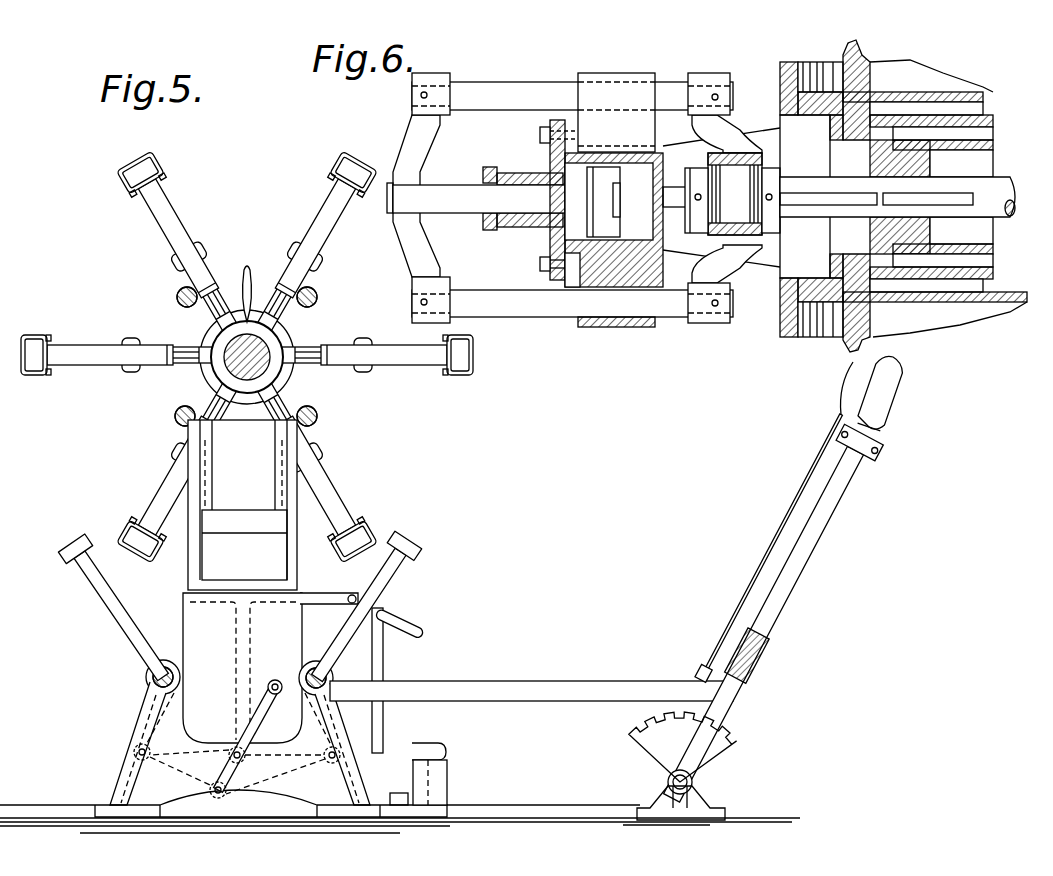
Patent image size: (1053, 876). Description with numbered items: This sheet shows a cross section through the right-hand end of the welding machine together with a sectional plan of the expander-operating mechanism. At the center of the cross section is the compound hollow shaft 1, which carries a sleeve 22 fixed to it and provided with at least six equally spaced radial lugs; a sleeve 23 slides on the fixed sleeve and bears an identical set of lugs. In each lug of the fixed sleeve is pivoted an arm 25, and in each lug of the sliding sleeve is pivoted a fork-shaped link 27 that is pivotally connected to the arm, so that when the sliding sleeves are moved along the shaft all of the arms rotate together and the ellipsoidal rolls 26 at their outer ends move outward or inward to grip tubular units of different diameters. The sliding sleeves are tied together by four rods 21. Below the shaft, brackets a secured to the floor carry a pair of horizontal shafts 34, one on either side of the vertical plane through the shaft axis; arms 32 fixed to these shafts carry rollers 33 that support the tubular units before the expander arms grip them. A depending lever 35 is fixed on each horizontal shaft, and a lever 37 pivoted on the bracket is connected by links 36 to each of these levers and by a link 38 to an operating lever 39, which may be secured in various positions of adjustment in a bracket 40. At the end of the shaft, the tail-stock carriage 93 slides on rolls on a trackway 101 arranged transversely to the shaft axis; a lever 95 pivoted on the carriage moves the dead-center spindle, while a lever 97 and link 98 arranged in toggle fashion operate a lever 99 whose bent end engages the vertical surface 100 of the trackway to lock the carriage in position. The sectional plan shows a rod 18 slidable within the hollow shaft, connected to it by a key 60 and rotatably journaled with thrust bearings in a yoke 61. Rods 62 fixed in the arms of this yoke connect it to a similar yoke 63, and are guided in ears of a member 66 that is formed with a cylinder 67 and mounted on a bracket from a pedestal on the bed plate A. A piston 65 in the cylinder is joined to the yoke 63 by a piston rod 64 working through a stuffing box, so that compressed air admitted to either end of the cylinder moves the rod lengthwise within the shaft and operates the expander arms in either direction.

In FIG. 5, the shaft 1 is at (232, 372).
In FIG. 6, the shaft 1 is at (955, 82).
In FIG. 6, the rod 18 is at (995, 188).
In FIG. 5, the rods 21 is at (177, 298).
In FIG. 5, the sleeve 22 is at (280, 350).
In FIG. 5, the sleeve 23 is at (206, 343).
In FIG. 5, the arm 25 is at (326, 240).
In FIG. 5, the roll 26 is at (362, 170).
In FIG. 5, the link 27 is at (286, 255).
In FIG. 5, the arms 32 is at (108, 597).
In FIG. 5, the rollers 33 is at (63, 548).
In FIG. 5, the shafts 34 is at (146, 676).
In FIG. 5, the lever 35 is at (148, 715).
In FIG. 5, the links 36 is at (172, 770).
In FIG. 5, the lever 37 is at (258, 690).
In FIG. 5, the link 38 is at (578, 686).
In FIG. 5, the operating lever 39 is at (800, 548).
In FIG. 5, the bracket 40 is at (640, 743).
In FIG. 6, the key 60 is at (885, 198).
In FIG. 6, the yoke 61 is at (712, 300).
In FIG. 6, the rods 62 is at (667, 95).
In FIG. 6, the yoke 63 is at (430, 134).
In FIG. 6, the piston rod 64 is at (486, 200).
In FIG. 6, the piston 65 is at (660, 223).
In FIG. 6, the member 66 is at (612, 88).
In FIG. 6, the cylinder 67 is at (632, 215).
In FIG. 5, the carriage 93 is at (242, 505).
In FIG. 5, the lever 95 is at (246, 290).
In FIG. 5, the lever 97 is at (418, 628).
In FIG. 5, the link 98 is at (385, 640).
In FIG. 5, the lever 99 is at (440, 752).
In FIG. 5, the vertical surface 100 is at (432, 772).
In FIG. 5, the trackway 101 is at (400, 801).
In FIG. 5, the brackets a is at (280, 778).
In FIG. 6, the bed plate A is at (895, 72).